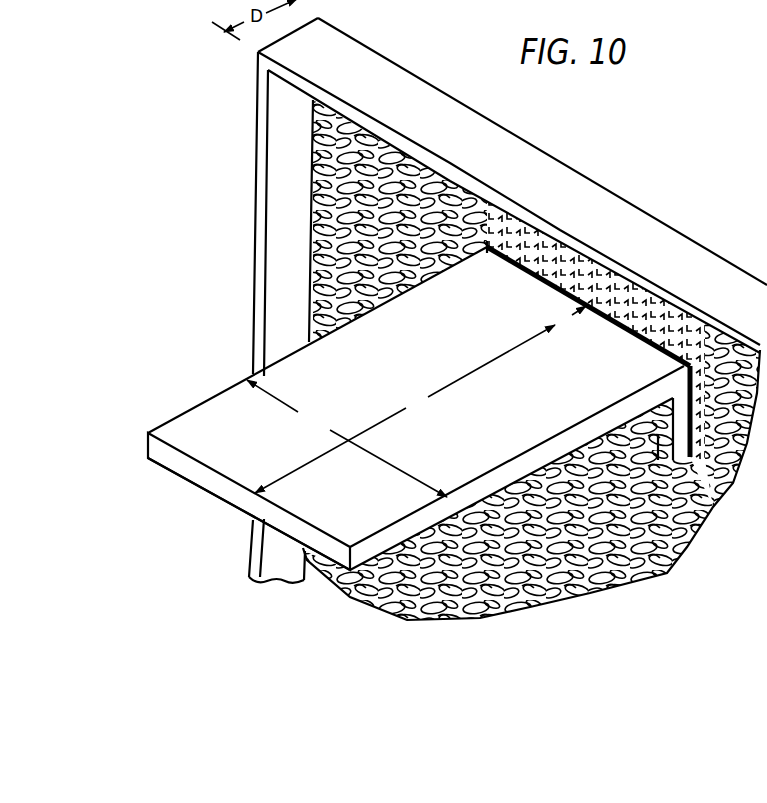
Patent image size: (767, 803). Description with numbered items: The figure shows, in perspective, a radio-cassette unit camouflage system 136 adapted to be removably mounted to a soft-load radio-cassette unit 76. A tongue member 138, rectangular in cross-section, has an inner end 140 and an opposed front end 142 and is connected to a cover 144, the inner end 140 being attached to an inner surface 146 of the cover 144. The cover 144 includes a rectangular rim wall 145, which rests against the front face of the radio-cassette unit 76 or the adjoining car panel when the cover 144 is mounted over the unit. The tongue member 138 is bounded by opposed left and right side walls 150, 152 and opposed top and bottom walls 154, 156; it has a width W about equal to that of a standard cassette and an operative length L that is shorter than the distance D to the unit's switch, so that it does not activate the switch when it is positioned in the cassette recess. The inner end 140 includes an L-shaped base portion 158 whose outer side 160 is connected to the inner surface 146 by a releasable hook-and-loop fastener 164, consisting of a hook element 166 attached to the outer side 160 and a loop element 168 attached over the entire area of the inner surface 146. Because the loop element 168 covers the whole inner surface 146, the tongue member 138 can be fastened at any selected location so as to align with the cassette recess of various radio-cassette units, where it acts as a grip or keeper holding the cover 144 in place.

The soft-load radio-cassette unit 76 is at (757, 131).
The radio-cassette unit camouflage system 136 is at (238, 188).
The tongue member 138 is at (158, 421).
The inner end 140 is at (488, 249).
The front end 142 is at (197, 472).
The cover 144 is at (462, 97).
The rectangular rim wall 145 is at (263, 118).
The inner surface 146 is at (330, 167).
The left side wall 150 is at (410, 530).
The right side wall 152 is at (217, 393).
The top wall 154 is at (306, 362).
The bottom wall 156 is at (233, 508).
The L-shaped base portion 158 is at (667, 550).
The outer side 160 is at (713, 497).
The hook-and-loop fastener 164 is at (667, 354).
The hook element 166 is at (643, 302).
The loop element 168 is at (553, 285).